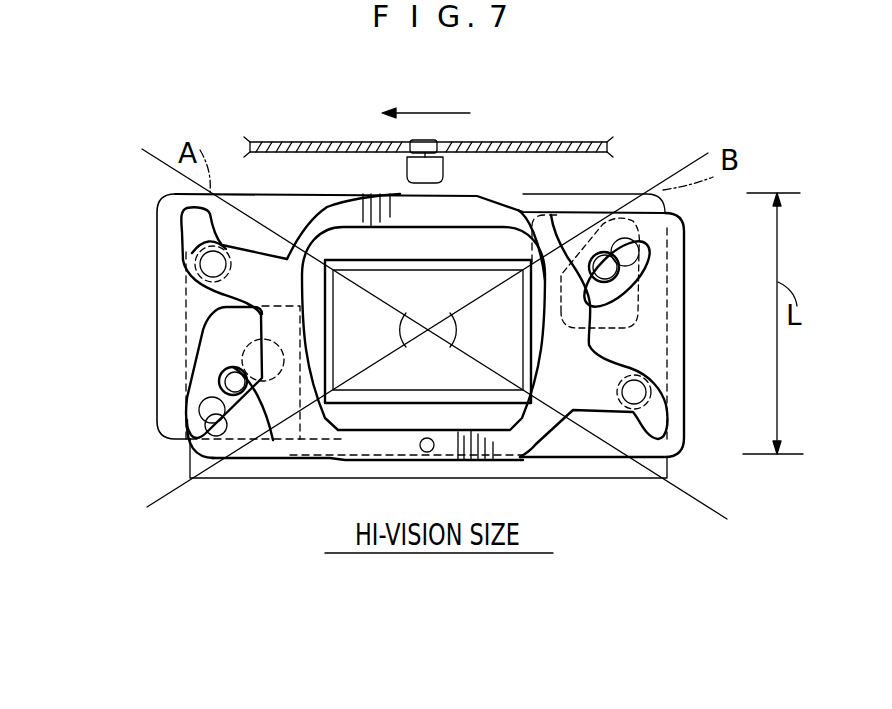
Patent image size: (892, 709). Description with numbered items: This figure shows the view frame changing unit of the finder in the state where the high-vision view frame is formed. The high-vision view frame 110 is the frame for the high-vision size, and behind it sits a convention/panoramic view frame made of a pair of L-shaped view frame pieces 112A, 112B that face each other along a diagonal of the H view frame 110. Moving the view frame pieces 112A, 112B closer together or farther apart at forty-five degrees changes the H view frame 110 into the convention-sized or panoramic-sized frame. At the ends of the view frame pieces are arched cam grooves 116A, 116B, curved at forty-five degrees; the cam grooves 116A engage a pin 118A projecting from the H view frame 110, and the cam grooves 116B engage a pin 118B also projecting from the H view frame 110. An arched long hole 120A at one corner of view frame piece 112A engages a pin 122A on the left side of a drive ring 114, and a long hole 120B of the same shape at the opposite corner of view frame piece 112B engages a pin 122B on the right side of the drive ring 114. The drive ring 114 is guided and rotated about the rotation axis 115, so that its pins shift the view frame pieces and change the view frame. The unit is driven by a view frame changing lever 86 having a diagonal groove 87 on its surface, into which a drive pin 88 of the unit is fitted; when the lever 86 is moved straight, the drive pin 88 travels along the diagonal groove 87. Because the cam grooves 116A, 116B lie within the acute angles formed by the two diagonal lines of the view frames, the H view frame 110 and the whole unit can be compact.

The view frame changing lever 86 is at (540, 143).
The diagonal groove 87 is at (412, 141).
The drive pin 88 is at (436, 140).
The high-vision (H) view frame 110 is at (604, 478).
The view frame piece 112A is at (298, 462).
The view frame piece 112B is at (627, 194).
The drive ring 114 is at (542, 427).
The rotation axis 115 is at (428, 452).
The cam groove 116A is at (247, 404).
The cam groove 116B is at (545, 276).
The pin 118A is at (232, 380).
The pin 118B is at (608, 272).
The arched long hole 120A is at (178, 228).
The long hole 120B is at (640, 432).
The pin 122A is at (195, 253).
The pin 122B is at (655, 398).